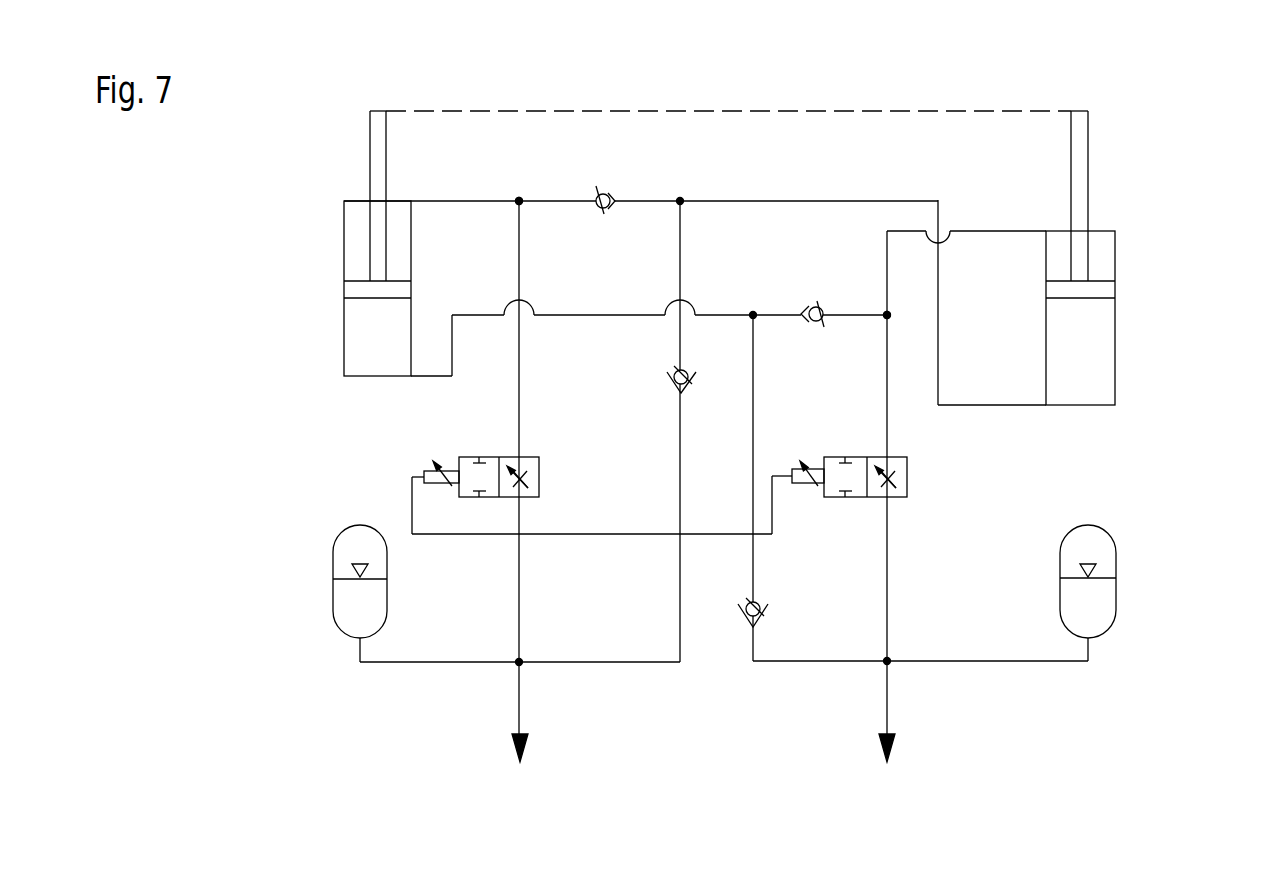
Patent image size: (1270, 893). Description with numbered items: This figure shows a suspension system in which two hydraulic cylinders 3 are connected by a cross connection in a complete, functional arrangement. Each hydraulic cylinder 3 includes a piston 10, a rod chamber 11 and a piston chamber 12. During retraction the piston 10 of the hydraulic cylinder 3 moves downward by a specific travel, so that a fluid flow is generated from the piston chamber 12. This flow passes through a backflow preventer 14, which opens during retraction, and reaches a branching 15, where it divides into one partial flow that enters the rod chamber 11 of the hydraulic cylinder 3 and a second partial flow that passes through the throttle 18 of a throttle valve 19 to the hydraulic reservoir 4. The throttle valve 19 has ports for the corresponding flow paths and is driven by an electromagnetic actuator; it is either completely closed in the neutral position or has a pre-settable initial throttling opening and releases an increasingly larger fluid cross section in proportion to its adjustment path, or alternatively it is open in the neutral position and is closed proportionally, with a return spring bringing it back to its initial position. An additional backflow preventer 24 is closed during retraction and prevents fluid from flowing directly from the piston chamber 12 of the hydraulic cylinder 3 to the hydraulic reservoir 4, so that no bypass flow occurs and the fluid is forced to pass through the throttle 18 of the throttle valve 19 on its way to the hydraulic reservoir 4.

The hydraulic cylinder 3 is at (711, 243).
The hydraulic reservoir 4 is at (298, 549).
The piston 10 is at (377, 127).
The rod chamber 11 is at (394, 230).
The piston chamber 12 is at (370, 363).
The backflow preventer 14 is at (598, 190).
The branching 15 is at (519, 201).
The throttle 18 is at (520, 473).
The throttle valve 19 is at (684, 448).
The backflow preventer 24 is at (673, 373).